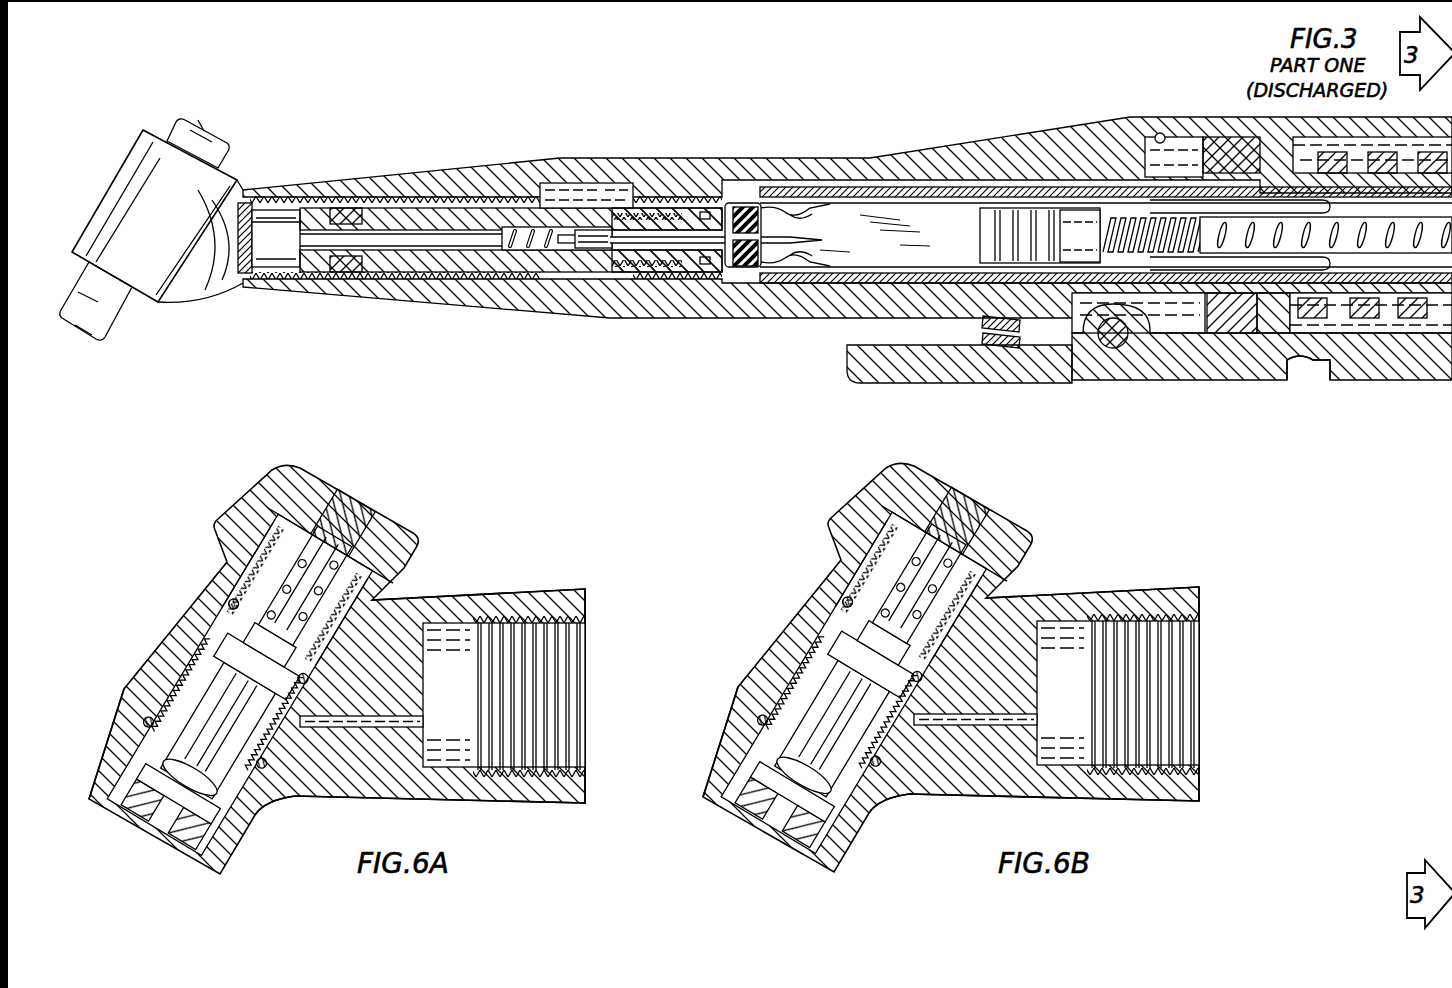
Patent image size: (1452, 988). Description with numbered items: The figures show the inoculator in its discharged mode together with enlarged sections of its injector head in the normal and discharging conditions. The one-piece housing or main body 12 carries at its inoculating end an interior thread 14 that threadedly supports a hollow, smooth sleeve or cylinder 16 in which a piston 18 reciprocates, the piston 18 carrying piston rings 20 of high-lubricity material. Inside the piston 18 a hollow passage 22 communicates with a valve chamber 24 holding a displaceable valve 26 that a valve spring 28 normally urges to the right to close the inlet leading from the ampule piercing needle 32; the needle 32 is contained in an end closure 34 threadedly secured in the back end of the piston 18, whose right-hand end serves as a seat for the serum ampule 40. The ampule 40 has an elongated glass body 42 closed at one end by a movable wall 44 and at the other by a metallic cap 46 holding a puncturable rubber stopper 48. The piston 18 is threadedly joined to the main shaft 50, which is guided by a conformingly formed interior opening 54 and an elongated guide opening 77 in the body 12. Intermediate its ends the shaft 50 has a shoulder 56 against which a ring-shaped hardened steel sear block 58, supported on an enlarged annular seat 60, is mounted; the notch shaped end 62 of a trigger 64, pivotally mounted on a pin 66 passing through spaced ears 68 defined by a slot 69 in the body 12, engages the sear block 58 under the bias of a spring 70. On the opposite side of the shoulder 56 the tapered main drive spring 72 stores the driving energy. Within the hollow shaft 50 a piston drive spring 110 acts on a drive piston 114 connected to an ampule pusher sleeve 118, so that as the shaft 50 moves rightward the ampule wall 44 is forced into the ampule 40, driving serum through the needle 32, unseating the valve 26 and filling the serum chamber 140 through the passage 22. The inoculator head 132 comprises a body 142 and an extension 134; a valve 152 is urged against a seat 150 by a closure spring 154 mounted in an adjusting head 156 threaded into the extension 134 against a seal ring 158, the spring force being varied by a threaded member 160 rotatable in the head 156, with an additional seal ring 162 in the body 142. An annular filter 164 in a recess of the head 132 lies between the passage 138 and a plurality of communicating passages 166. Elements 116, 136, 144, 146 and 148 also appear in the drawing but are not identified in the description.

In FIG. 3, the main body 12 is at (1000, 150).
In FIG. 3, the interior thread 14 is at (372, 208).
In FIG. 3, the cylinder sleeve 16 is at (420, 234).
In FIG. 3, the piston 18 is at (440, 272).
In FIG. 3, the piston rings 20 is at (348, 224).
In FIG. 3, the hollow passage 22 is at (515, 227).
In FIG. 3, the valve chamber 24 is at (592, 230).
In FIG. 3, the valve means 26 is at (600, 262).
In FIG. 3, the valve spring 28 is at (565, 235).
In FIG. 3, the ampule piercing needle 32 is at (780, 237).
In FIG. 3, the end closure 34 is at (675, 272).
In FIG. 3, the ampule 40 is at (882, 196).
In FIG. 3, the glass body 42 is at (832, 267).
In FIG. 3, the movable wall 44 is at (992, 208).
In FIG. 3, the metallic cap 46 is at (746, 205).
In FIG. 3, the rubber stopper 48 is at (748, 266).
In FIG. 3, the main shaft 50 is at (895, 187).
In FIG. 3, the interior opening 54 is at (598, 183).
In FIG. 3, the shoulder 56 is at (1278, 333).
In FIG. 3, the sear block 58 is at (1235, 333).
In FIG. 3, the annular seat 60 is at (1205, 137).
In FIG. 3, the notch shaped end 62 is at (1315, 362).
In FIG. 3, the trigger 64 is at (955, 383).
In FIG. 3, the pin 66 is at (1113, 349).
In FIG. 3, the spaced ears 68 is at (1160, 333).
In FIG. 3, the slot 69 is at (1082, 345).
In FIG. 3, the spring 70 is at (982, 330).
In FIG. 3, the main drive spring 72 is at (1387, 152).
In FIG. 3, the guide opening 77 is at (1160, 137).
In FIG. 3, the piston drive spring 110 is at (1402, 253).
In FIG. 3, the drive piston 114 is at (1075, 210).
In FIG. 3, the return spring 116 is at (1125, 215).
In FIG. 3, the ampule pusher sleeve 118 is at (1387, 270).
In FIG. 3, the inoculator head 132 is at (124, 154).
In FIG. 6A, the inoculator head 132 is at (148, 623).
In FIG. 6B, the inoculator head 132 is at (951, 667).
In FIG. 3, the extension 134 is at (300, 197).
In FIG. 6A, the extension 134 is at (505, 600).
In FIG. 6B, the extension 134 is at (1054, 680).
In FIG. 3, the seal ring 136 is at (246, 203).
In FIG. 3, the passage 138 is at (222, 292).
In FIG. 6A, the passage 138 is at (350, 728).
In FIG. 6B, the passage 138 is at (975, 767).
In FIG. 3, the serum chamber 140 is at (272, 268).
In FIG. 6A, the serum chamber 140 is at (520, 777).
In FIG. 6B, the serum chamber 140 is at (1118, 729).
In FIG. 6A, the body 142 is at (125, 795).
In FIG. 6B, the body 142 is at (699, 744).
In FIG. 6A, the O-ring 144 is at (168, 700).
In FIG. 6B, the O-ring 144 is at (788, 741).
In FIG. 6A, the lower block 146 is at (215, 855).
In FIG. 6B, the lower block 146 is at (790, 847).
In FIG. 3, the inlet stem 148 is at (90, 335).
In FIG. 6A, the inlet stem 148 is at (170, 826).
In FIG. 6B, the inlet stem 148 is at (744, 823).
In FIG. 6A, the seat 150 is at (228, 840).
In FIG. 6B, the seat 150 is at (835, 809).
In FIG. 6A, the valve 152 is at (200, 765).
In FIG. 6B, the valve 152 is at (810, 708).
In FIG. 6A, the closure spring 154 is at (378, 600).
In FIG. 6B, the closure spring 154 is at (957, 592).
In FIG. 6A, the adjusting head 156 is at (298, 465).
In FIG. 6B, the adjusting head 156 is at (922, 516).
In FIG. 6A, the seal ring 158 is at (385, 585).
In FIG. 6B, the seal ring 158 is at (863, 583).
In FIG. 3, the threaded member 160 is at (190, 126).
In FIG. 6A, the threaded member 160 is at (318, 495).
In FIG. 6B, the threaded member 160 is at (972, 502).
In FIG. 6A, the additional seal ring 162 is at (215, 590).
In FIG. 6B, the additional seal ring 162 is at (828, 639).
In FIG. 6A, the annular filter 164 is at (293, 800).
In FIG. 6B, the annular filter 164 is at (912, 807).
In FIG. 6A, the communicating passages 166 is at (165, 648).
In FIG. 6B, the communicating passages 166 is at (809, 702).